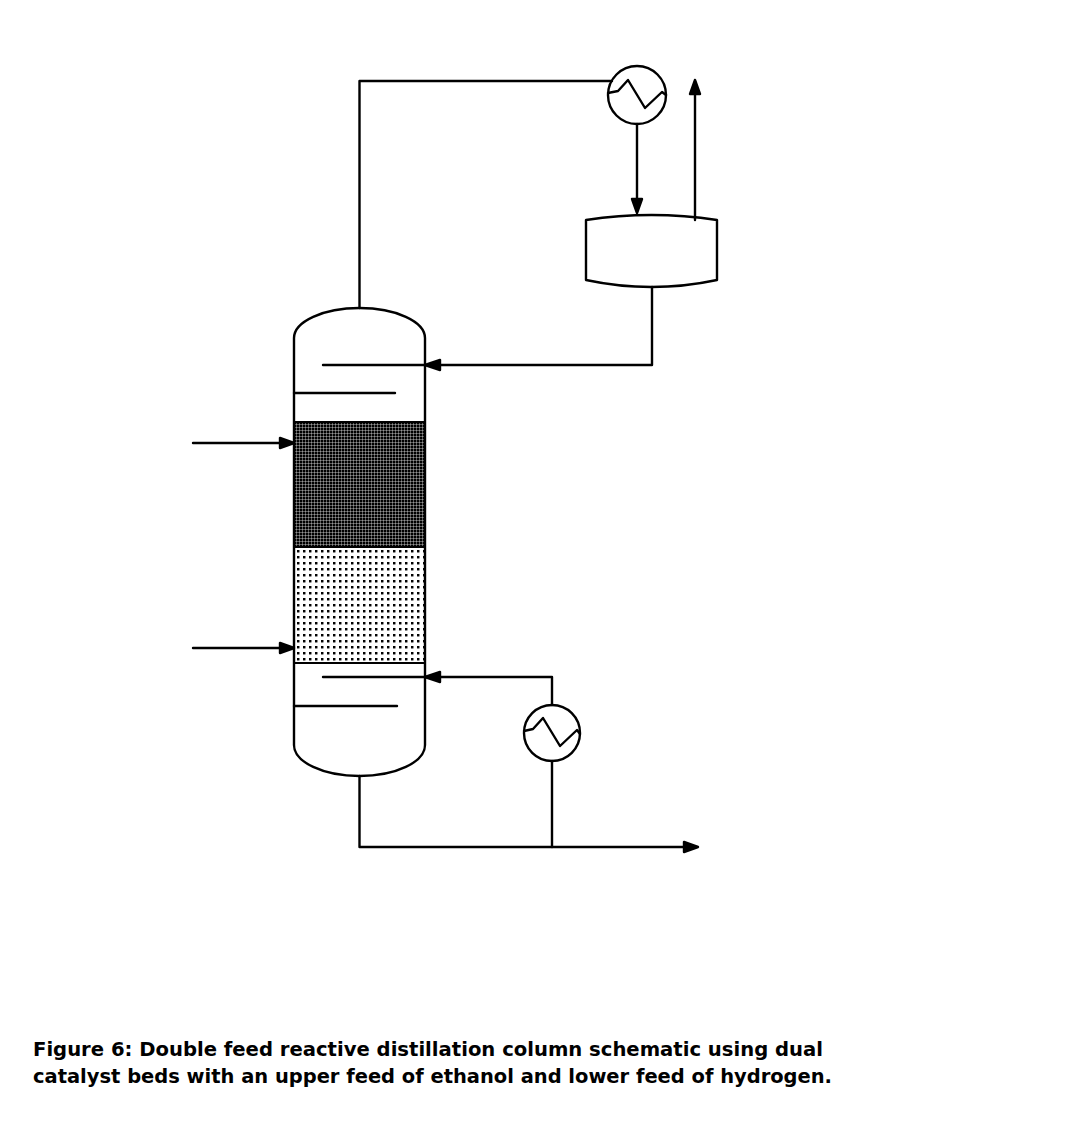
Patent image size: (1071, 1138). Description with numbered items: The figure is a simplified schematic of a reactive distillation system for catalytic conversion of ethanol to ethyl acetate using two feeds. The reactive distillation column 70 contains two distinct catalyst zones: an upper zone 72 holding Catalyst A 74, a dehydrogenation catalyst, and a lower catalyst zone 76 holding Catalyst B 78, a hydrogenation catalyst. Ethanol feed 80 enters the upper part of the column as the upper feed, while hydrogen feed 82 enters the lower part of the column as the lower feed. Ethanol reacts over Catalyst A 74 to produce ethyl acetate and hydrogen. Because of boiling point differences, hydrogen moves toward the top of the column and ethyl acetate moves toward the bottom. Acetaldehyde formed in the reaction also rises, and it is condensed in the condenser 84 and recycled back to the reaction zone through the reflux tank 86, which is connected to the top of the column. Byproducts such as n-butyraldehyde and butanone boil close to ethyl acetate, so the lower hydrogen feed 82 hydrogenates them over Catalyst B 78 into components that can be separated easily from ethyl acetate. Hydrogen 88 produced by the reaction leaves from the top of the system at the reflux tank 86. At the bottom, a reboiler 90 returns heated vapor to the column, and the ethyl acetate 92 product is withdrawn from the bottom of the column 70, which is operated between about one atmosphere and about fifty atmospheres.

The reactive distillation column 70 is at (295, 540).
The upper zone 72 is at (387, 448).
The Catalyst A 74 is at (478, 471).
The lower catalyst zone 76 is at (323, 607).
The Catalyst B 78 is at (425, 605).
The ethanol feed 80 is at (173, 438).
The hydrogen feed 82 is at (163, 649).
The condenser 84 is at (637, 66).
The reflux tank 86 is at (717, 250).
The hydrogen 88 is at (729, 114).
The reboiler 90 is at (582, 732).
The ethyl acetate 92 is at (620, 827).